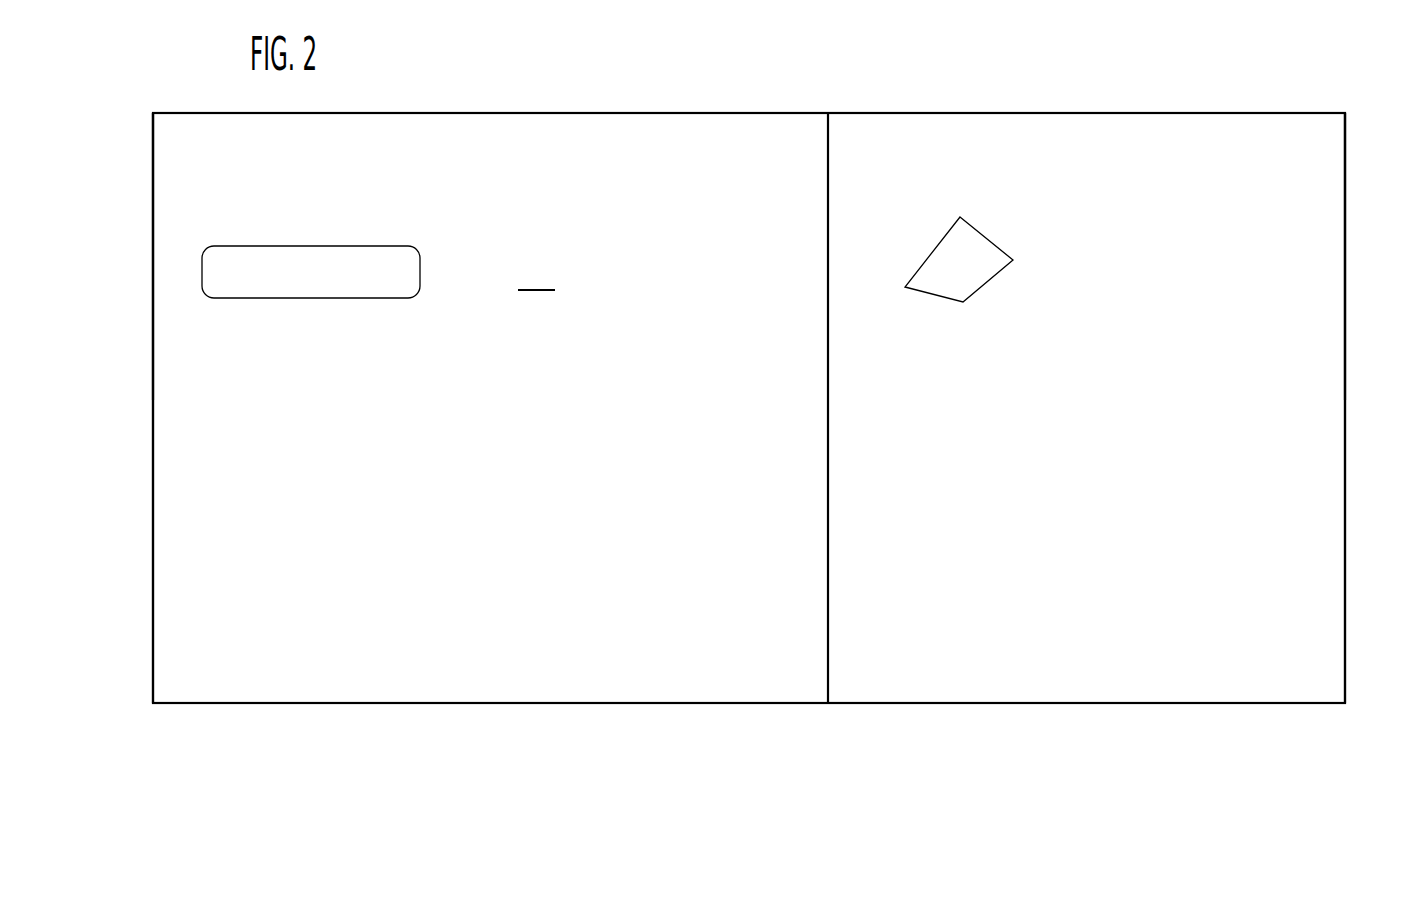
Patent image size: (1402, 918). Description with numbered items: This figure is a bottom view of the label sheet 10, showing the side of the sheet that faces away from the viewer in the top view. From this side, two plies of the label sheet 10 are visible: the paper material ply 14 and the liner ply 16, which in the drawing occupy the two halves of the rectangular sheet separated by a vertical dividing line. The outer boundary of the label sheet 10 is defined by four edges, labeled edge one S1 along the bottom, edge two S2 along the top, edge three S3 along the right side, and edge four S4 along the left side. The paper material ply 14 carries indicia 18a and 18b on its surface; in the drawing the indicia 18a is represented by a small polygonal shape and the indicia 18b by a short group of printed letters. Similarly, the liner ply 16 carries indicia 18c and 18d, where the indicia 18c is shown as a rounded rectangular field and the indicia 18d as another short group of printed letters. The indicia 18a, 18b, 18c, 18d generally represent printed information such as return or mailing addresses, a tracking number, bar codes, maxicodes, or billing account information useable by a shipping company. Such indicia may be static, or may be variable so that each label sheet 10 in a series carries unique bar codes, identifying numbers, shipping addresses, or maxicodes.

The label sheet 10 is at (635, 738).
The paper material ply 14 is at (1090, 635).
The liner ply 16 is at (327, 666).
The indicia 18a is at (1020, 243).
The indicia 18b is at (952, 428).
The indicia 18c is at (316, 292).
The indicia 18d is at (543, 307).
The edge one S1 is at (915, 710).
The edge two S2 is at (883, 107).
The edge three S3 is at (1350, 443).
The edge four S4 is at (150, 263).